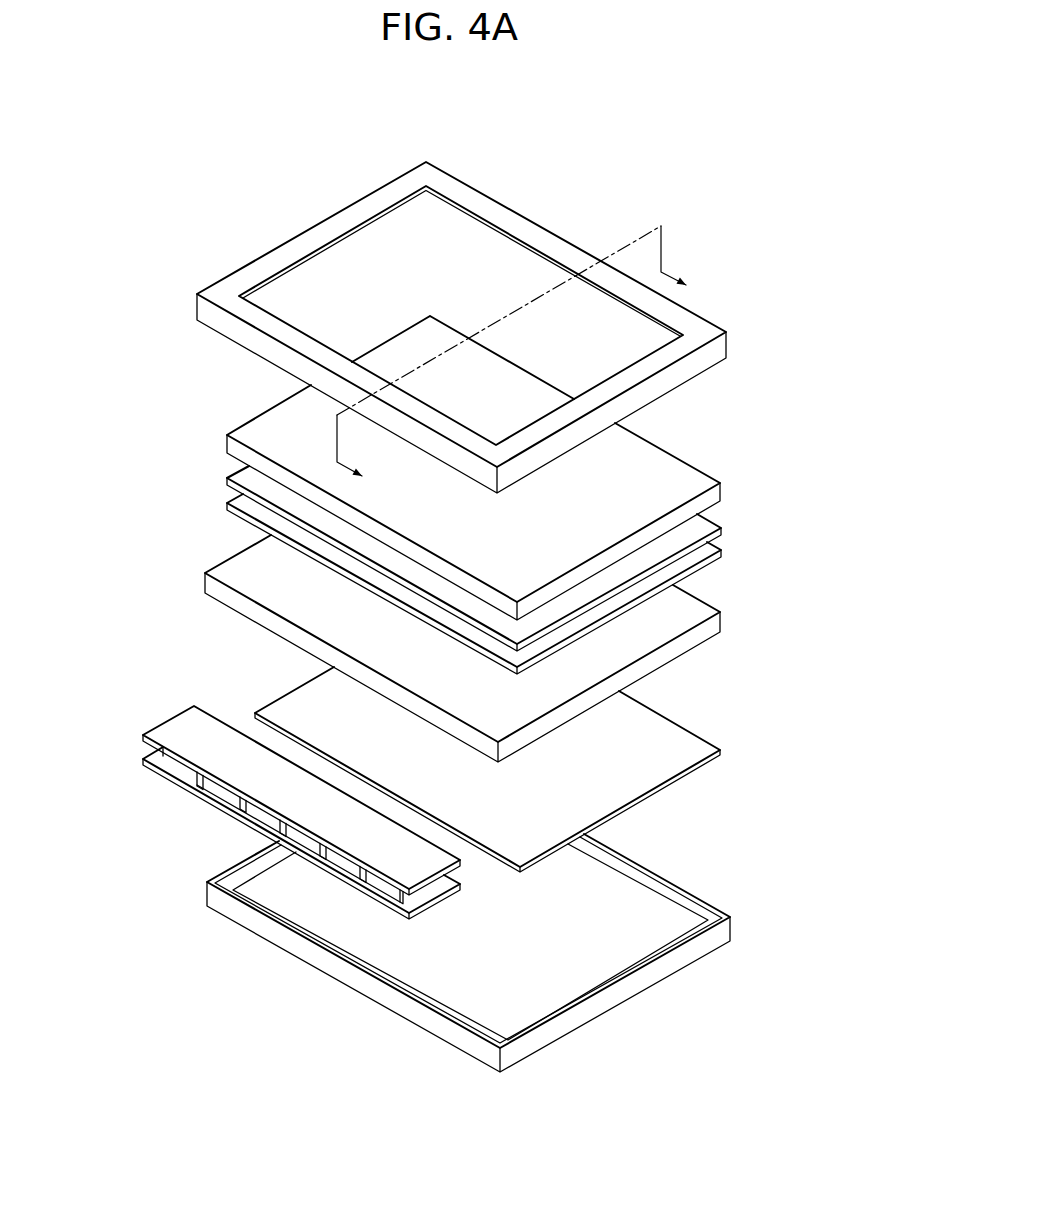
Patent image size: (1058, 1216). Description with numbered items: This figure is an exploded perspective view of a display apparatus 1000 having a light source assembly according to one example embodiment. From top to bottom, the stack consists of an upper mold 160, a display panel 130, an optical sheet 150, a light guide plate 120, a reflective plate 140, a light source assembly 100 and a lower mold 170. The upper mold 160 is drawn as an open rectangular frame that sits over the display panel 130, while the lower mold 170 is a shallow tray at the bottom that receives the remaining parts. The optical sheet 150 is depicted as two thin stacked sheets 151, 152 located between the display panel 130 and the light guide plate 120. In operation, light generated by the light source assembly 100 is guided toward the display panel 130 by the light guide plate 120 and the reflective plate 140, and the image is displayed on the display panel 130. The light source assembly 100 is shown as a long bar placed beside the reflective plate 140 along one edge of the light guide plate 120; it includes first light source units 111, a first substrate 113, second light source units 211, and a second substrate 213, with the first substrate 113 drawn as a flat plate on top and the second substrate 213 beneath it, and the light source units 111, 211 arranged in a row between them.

The display apparatus 1000 is at (567, 183).
The upper mold 160 is at (720, 348).
The display panel 130 is at (720, 491).
The optical sheet 150 is at (531, 570).
The first optical sheet 151 is at (721, 528).
The second optical sheet 152 is at (721, 553).
The light guide plate 120 is at (718, 622).
The reflective plate 140 is at (720, 750).
The light source assembly 100 is at (248, 812).
The first substrate 113 is at (143, 735).
The second substrate 213 is at (143, 758).
The second light source units 211 is at (204, 781).
The first light source units 111 is at (190, 789).
The lower mold 170 is at (722, 930).